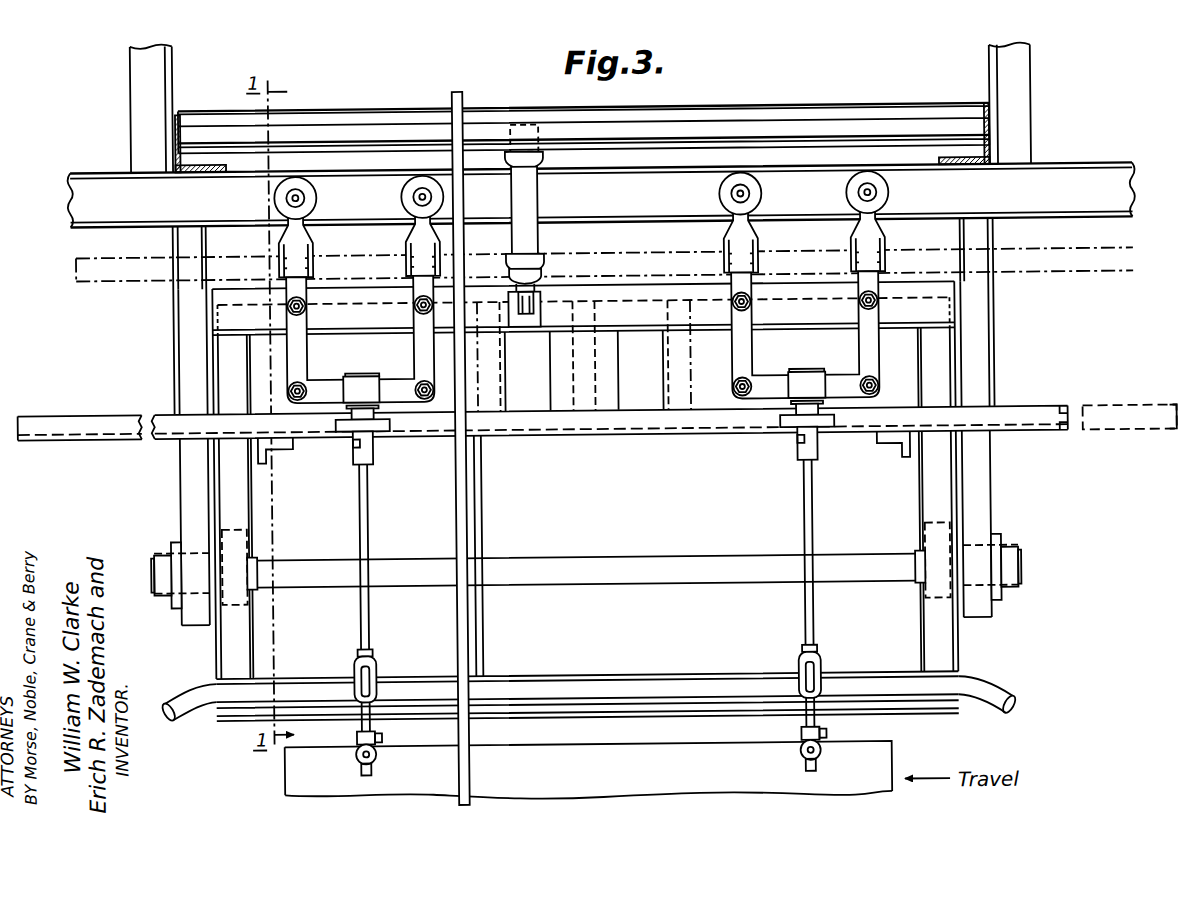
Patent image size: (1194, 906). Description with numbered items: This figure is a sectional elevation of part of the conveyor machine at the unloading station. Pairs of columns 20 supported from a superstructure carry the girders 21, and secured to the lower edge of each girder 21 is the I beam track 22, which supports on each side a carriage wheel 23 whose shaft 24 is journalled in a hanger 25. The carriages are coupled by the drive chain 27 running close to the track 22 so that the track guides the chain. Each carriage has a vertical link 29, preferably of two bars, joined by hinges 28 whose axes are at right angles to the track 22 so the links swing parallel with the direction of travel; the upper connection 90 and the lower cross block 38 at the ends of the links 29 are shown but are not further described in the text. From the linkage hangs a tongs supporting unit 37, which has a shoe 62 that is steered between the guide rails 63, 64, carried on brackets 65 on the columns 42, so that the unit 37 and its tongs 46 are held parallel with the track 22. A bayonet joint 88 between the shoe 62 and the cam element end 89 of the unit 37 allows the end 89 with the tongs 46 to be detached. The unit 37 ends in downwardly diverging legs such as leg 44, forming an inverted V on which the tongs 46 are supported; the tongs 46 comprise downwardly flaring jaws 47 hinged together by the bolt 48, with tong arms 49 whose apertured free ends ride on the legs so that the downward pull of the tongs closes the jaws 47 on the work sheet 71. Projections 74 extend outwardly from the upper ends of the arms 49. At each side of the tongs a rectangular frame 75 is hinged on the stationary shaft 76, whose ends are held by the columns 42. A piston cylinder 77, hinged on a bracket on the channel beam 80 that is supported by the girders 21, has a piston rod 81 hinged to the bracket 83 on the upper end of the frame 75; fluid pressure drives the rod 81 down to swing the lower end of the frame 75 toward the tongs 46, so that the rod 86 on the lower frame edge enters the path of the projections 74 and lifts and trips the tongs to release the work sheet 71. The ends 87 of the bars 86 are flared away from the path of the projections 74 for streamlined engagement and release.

The column 20 is at (135, 80).
The girder 21 is at (204, 168).
The I beam track 22 is at (111, 175).
The carriage wheel 23 is at (317, 191).
The shaft 24 is at (292, 195).
The hanger 25 is at (289, 235).
The drive chain 27 is at (138, 250).
The hinge 28 is at (285, 383).
The vertical link 29 is at (305, 347).
The tongs supporting unit 37 is at (585, 555).
The cross block 38 is at (362, 370).
The column 42 is at (185, 506).
The leg 44 is at (369, 670).
The tongs 46 is at (579, 722).
The jaw 47 is at (357, 764).
The bolt 48 is at (350, 736).
The tong arm 49 is at (366, 717).
The shoe 62 is at (388, 424).
The guide rail 63 is at (1127, 414).
The guide rail 64 is at (160, 407).
The bracket 65 is at (268, 448).
The work sheet 71 is at (600, 746).
The projection 74 is at (356, 648).
The rectangular frame 75 is at (206, 629).
The stationary shaft 76 is at (617, 578).
The piston cylinder 77 is at (544, 205).
The channel beam 80 is at (680, 107).
The piston rod 81 is at (542, 299).
The bracket 83 is at (528, 314).
The rod 86 is at (660, 691).
The flared end 87 is at (210, 688).
The bayonet joint 88 is at (352, 449).
The cam element end 89 is at (366, 545).
The bolt 90 is at (286, 305).